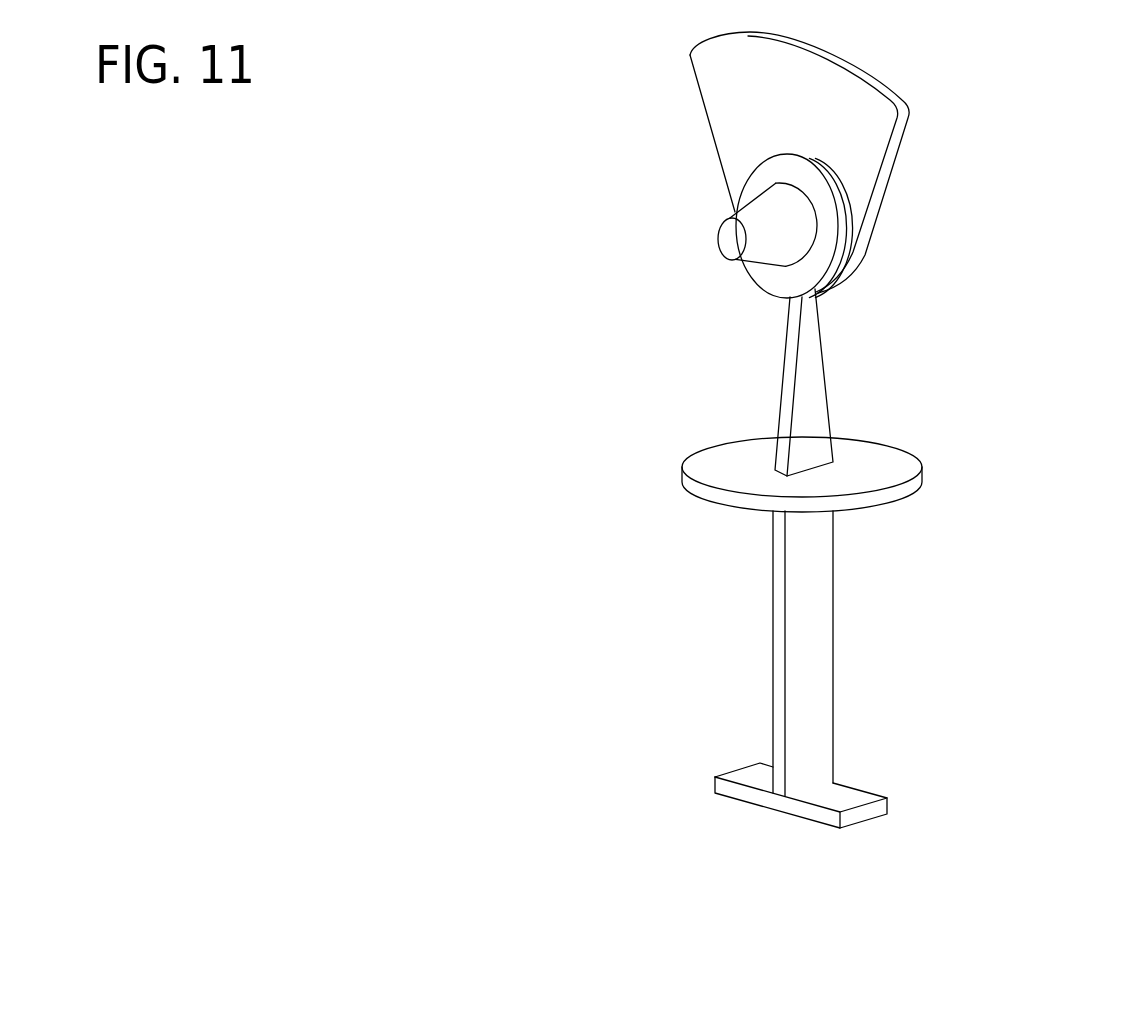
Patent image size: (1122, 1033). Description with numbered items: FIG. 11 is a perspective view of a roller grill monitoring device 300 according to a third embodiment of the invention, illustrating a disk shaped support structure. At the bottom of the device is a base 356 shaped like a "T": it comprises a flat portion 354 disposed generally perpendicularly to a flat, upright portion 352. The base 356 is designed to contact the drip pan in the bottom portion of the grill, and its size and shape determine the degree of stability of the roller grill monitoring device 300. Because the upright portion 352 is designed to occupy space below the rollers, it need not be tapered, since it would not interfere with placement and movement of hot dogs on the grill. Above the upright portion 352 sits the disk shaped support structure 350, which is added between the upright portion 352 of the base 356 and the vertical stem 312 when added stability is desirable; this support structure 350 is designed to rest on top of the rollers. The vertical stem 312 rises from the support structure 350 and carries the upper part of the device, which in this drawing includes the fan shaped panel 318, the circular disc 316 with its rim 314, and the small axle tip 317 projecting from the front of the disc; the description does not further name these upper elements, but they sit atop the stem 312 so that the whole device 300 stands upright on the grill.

The roller grill monitoring device 300 is at (551, 131).
The vertical stem 312 is at (808, 395).
The hub rim 314 is at (843, 232).
The hub disc 316 is at (783, 165).
The axle tip 317 is at (730, 240).
The blade 318 is at (822, 98).
The support structure 350 is at (878, 472).
The upright portion 352 is at (782, 673).
The flat portion 354 is at (857, 822).
The base 356 is at (915, 850).